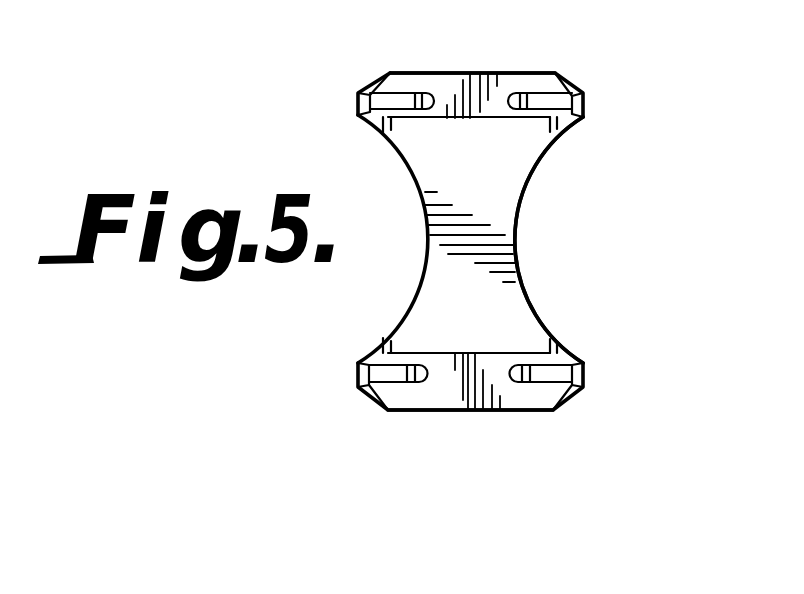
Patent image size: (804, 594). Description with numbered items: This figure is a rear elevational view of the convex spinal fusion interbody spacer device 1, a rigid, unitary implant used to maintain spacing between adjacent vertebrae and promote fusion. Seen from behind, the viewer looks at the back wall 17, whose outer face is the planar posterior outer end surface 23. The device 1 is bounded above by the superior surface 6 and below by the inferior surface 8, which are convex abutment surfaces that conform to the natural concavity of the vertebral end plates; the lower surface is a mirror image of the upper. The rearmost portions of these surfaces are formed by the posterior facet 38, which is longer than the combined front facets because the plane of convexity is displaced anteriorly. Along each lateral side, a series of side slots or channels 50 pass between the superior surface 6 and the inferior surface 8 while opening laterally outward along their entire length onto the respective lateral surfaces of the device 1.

The convex spinal fusion interbody spacer device 1 is at (578, 250).
The superior surface 6 is at (438, 72).
The inferior surface 8 is at (453, 412).
The back wall 17 is at (503, 333).
The posterior outer end surface 23 is at (515, 145).
The posterior facet 38 is at (522, 80).
The side slots or channels 50 is at (380, 100).